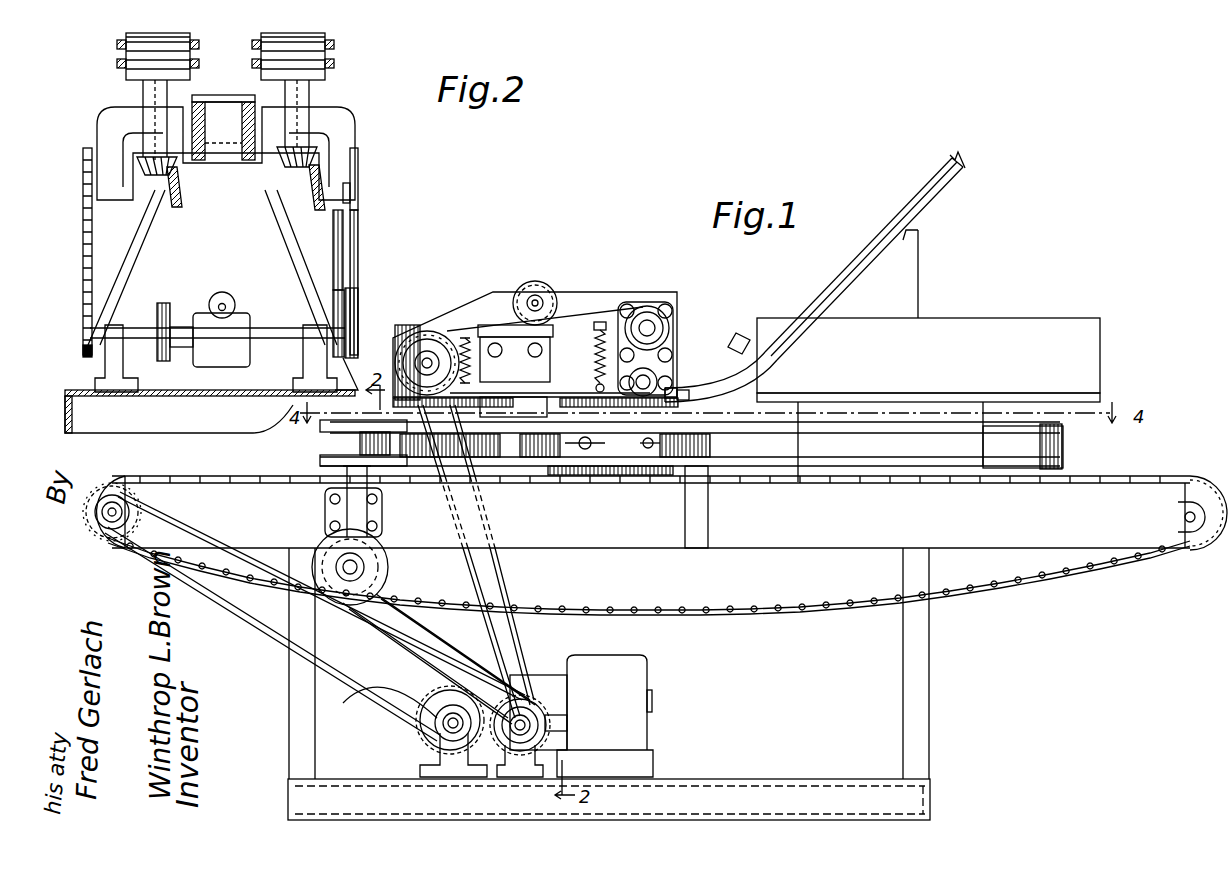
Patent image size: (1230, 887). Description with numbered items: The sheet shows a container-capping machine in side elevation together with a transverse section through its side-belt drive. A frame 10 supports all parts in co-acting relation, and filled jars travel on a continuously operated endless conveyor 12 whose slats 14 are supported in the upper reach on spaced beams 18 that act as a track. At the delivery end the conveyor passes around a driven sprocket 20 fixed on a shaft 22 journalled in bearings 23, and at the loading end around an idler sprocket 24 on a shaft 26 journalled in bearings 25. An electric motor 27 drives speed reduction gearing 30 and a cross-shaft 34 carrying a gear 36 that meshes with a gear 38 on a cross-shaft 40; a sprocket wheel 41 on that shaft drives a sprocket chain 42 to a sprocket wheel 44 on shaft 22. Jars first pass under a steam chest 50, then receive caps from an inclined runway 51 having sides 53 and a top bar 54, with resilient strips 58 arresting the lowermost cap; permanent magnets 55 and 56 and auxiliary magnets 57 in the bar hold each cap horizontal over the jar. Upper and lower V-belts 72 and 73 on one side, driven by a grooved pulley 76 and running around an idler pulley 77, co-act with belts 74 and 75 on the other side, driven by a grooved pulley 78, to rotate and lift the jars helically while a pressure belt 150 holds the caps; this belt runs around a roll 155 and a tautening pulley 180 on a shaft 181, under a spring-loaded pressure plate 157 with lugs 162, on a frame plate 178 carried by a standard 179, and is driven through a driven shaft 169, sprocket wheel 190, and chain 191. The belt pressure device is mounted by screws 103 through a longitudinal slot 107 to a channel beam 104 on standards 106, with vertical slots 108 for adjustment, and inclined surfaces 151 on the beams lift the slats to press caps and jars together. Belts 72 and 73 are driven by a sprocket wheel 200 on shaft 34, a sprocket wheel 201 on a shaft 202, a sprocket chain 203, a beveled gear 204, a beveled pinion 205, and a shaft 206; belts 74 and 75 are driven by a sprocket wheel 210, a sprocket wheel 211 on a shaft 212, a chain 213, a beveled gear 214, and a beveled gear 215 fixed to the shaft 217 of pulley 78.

In FIG. 1, the frame 10 is at (281, 688).
In FIG. 1, the endless conveyor 12 is at (806, 606).
In FIG. 2, the slats 14 is at (222, 90).
In FIG. 1, the slats 14 is at (866, 483).
In FIG. 2, the beams 18 is at (223, 122).
In FIG. 1, the beams 18 is at (651, 526).
In FIG. 1, the driven sprocket 20 is at (92, 528).
In FIG. 1, the shaft 22 is at (128, 508).
In FIG. 1, the bearings 23 is at (124, 492).
In FIG. 1, the idler sprocket 24 is at (1202, 553).
In FIG. 1, the bearings 25 is at (1180, 512).
In FIG. 1, the shaft 26 is at (1185, 518).
In FIG. 1, the electric motor 27 is at (605, 716).
In FIG. 2, the speed reduction gearing 30 is at (231, 318).
In FIG. 1, the speed reduction gearing 30 is at (538, 680).
In FIG. 2, the cross-shaft 34 is at (268, 330).
In FIG. 1, the cross-shaft 34 is at (565, 717).
In FIG. 2, the gear 36 is at (168, 312).
In FIG. 1, the gear 36 is at (560, 743).
In FIG. 1, the gear 38 is at (428, 740).
In FIG. 1, the cross-shaft 40 is at (436, 719).
In FIG. 1, the sprocket wheel 41 is at (383, 702).
In FIG. 1, the sprocket chain 42 is at (268, 632).
In FIG. 1, the sprocket wheel 44 is at (172, 519).
In FIG. 1, the chest 50 is at (928, 311).
In FIG. 1, the inclined runway 51 is at (922, 169).
In FIG. 1, the sides 53 is at (832, 292).
In FIG. 1, the top bar 54 is at (810, 300).
In FIG. 1, the permanent magnet 55 is at (695, 394).
In FIG. 1, the permanent magnet 56 is at (681, 390).
In FIG. 1, the auxiliary permanent magnets 57 is at (674, 386).
In FIG. 1, the resilient strips 58 is at (745, 339).
In FIG. 2, the upper side-belt 72 is at (334, 52).
In FIG. 1, the upper side-belt 72 is at (850, 433).
In FIG. 2, the lower side-belt 73 is at (334, 66).
In FIG. 1, the lower side-belt 73 is at (832, 483).
In FIG. 2, the upper side-belt 74 is at (126, 47).
In FIG. 2, the lower side-belt 75 is at (117, 66).
In FIG. 1, the grooved pulley 76 is at (320, 437).
In FIG. 1, the grooved idler pulley 77 is at (1063, 449).
In FIG. 2, the grooved pulley 78 is at (190, 38).
In FIG. 1, the screws 103 is at (648, 450).
In FIG. 1, the channel beam 104 is at (708, 444).
In FIG. 1, the standards 106 is at (708, 518).
In FIG. 1, the longitudinal slot 107 is at (586, 450).
In FIG. 1, the vertical slots 108 is at (776, 394).
In FIG. 1, the pressure belt 150 is at (514, 390).
In FIG. 1, the inclined surfaces 151 is at (557, 485).
In FIG. 1, the idler roll 155 is at (666, 326).
In FIG. 1, the pressure plate 157 is at (487, 362).
In FIG. 1, the lugs 162 is at (578, 357).
In FIG. 1, the driven shaft 169 is at (437, 352).
In FIG. 1, the frame plate 178 is at (612, 292).
In FIG. 1, the standard 179 is at (487, 330).
In FIG. 1, the pulley 180 is at (567, 281).
In FIG. 1, the shaft 181 is at (535, 298).
In FIG. 2, the sprocket wheel 190 is at (352, 300).
In FIG. 1, the sprocket wheel 190 is at (437, 330).
In FIG. 2, the sprocket chain 191 is at (356, 268).
In FIG. 1, the sprocket chain 191 is at (508, 592).
In FIG. 2, the sprocket wheel 200 is at (345, 333).
In FIG. 2, the sprocket wheel 201 is at (360, 172).
In FIG. 2, the shaft 202 is at (300, 226).
In FIG. 2, the sprocket chain 203 is at (356, 216).
In FIG. 2, the beveled gear 204 is at (358, 197).
In FIG. 2, the beveled pinion 205 is at (322, 160).
In FIG. 2, the shaft 206 is at (312, 110).
In FIG. 2, the sprocket wheel 210 is at (86, 345).
In FIG. 1, the sprocket wheel 210 is at (548, 747).
In FIG. 2, the sprocket wheel 211 is at (88, 150).
In FIG. 1, the sprocket wheel 211 is at (330, 550).
In FIG. 2, the shaft 212 is at (157, 192).
In FIG. 1, the shaft 212 is at (372, 567).
In FIG. 2, the chain 213 is at (92, 214).
In FIG. 1, the chain 213 is at (400, 649).
In FIG. 2, the beveled gear 214 is at (187, 193).
In FIG. 2, the beveled gear 215 is at (130, 142).
In FIG. 2, the shaft 217 is at (140, 97).